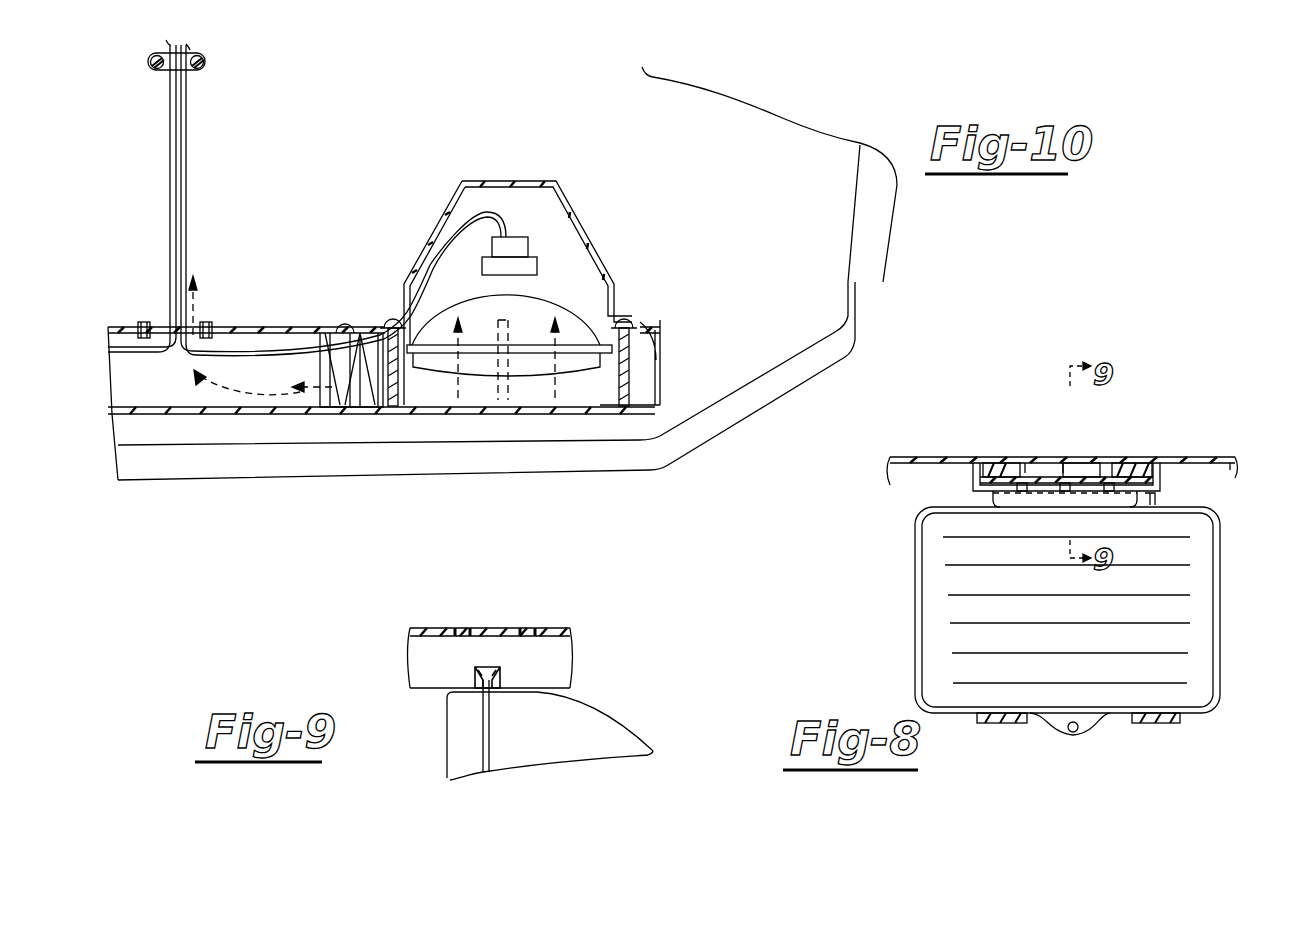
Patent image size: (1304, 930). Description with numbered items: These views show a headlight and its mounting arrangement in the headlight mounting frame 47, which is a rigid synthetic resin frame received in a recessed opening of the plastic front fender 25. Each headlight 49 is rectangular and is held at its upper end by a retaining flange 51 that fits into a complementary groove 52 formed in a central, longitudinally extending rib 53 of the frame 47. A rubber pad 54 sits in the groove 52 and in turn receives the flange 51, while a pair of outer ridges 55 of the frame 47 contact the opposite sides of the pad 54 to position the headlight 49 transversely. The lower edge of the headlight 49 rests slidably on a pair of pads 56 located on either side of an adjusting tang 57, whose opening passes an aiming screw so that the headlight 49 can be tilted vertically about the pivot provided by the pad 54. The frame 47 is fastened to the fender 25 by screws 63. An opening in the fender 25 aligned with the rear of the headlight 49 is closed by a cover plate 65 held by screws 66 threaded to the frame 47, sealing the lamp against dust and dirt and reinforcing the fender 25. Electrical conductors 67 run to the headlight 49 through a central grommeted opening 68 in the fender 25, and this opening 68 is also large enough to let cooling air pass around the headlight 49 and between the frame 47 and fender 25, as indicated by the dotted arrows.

In FIG. 10, the front fender 25 is at (283, 327).
In FIG. 10, the headlight mounting frame 47 is at (282, 416).
In FIG. 8, the headlight mounting frame 47 is at (1228, 462).
In FIG. 9, the headlight mounting frame 47 is at (447, 728).
In FIG. 10, the headlight 49 is at (470, 378).
In FIG. 8, the headlight 49 is at (1205, 612).
In FIG. 8, the retaining flange 51 is at (1150, 506).
In FIG. 9, the retaining flange 51 is at (505, 687).
In FIG. 8, the groove 52 is at (1022, 475).
In FIG. 9, the groove 52 is at (487, 667).
In FIG. 8, the longitudinally extending rib 53 is at (1125, 470).
In FIG. 9, the longitudinally extending rib 53 is at (416, 660).
In FIG. 8, the rubber pad 54 is at (1063, 480).
In FIG. 9, the rubber pad 54 is at (500, 668).
In FIG. 8, the outer ridge 55 is at (1008, 463).
In FIG. 9, the outer ridge 55 is at (470, 668).
In FIG. 8, the pad 56 is at (995, 727).
In FIG. 8, the adjusting tang 57 is at (1078, 736).
In FIG. 10, the screw 63 is at (345, 325).
In FIG. 10, the cover plate 65 is at (526, 184).
In FIG. 10, the screw 66 is at (392, 320).
In FIG. 10, the conductor 67 is at (140, 337).
In FIG. 10, the grommeted opening 68 is at (210, 330).